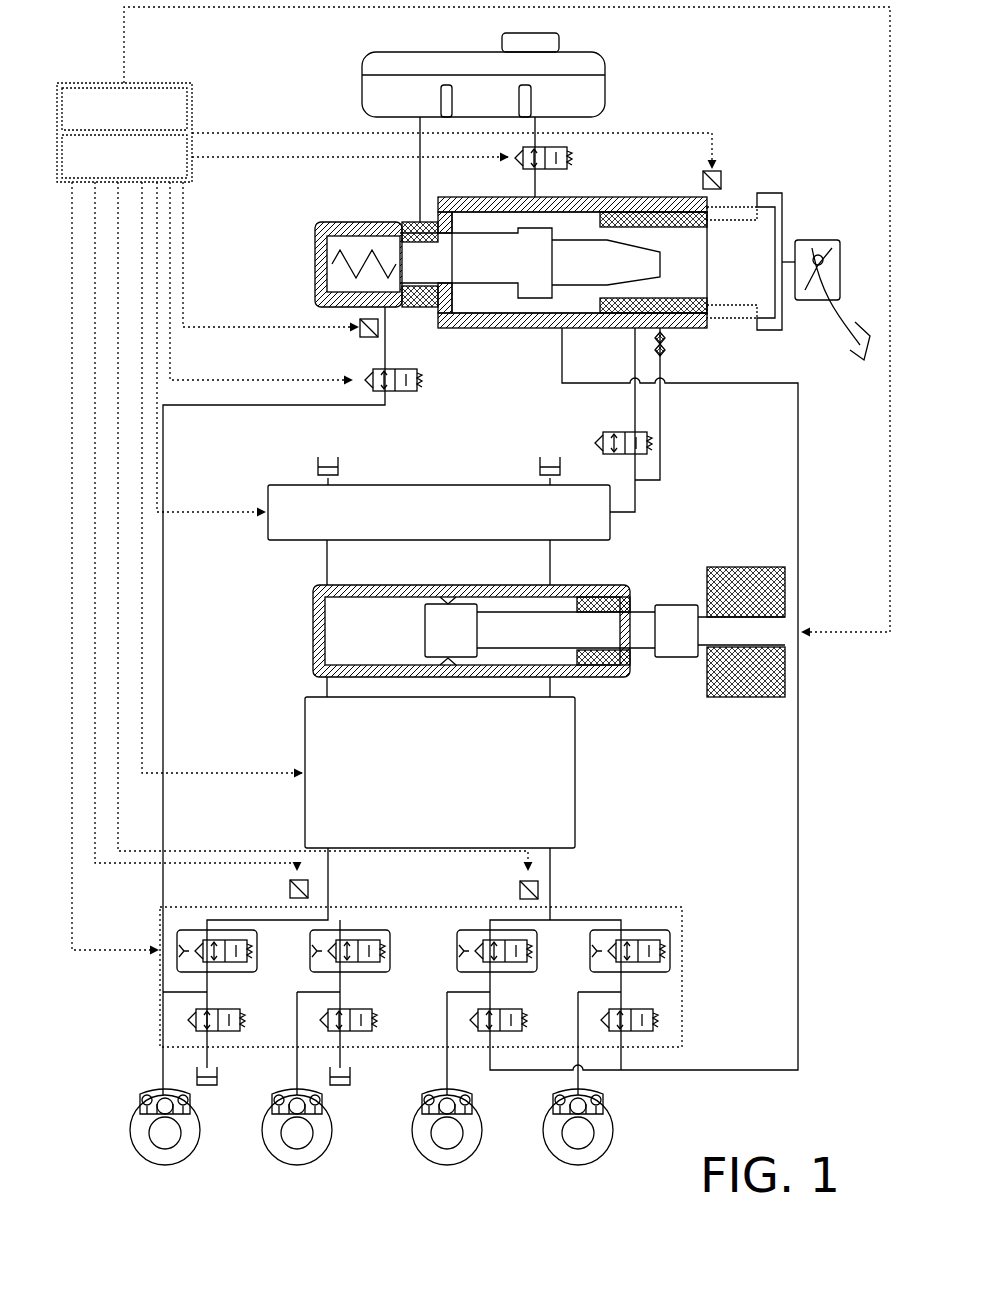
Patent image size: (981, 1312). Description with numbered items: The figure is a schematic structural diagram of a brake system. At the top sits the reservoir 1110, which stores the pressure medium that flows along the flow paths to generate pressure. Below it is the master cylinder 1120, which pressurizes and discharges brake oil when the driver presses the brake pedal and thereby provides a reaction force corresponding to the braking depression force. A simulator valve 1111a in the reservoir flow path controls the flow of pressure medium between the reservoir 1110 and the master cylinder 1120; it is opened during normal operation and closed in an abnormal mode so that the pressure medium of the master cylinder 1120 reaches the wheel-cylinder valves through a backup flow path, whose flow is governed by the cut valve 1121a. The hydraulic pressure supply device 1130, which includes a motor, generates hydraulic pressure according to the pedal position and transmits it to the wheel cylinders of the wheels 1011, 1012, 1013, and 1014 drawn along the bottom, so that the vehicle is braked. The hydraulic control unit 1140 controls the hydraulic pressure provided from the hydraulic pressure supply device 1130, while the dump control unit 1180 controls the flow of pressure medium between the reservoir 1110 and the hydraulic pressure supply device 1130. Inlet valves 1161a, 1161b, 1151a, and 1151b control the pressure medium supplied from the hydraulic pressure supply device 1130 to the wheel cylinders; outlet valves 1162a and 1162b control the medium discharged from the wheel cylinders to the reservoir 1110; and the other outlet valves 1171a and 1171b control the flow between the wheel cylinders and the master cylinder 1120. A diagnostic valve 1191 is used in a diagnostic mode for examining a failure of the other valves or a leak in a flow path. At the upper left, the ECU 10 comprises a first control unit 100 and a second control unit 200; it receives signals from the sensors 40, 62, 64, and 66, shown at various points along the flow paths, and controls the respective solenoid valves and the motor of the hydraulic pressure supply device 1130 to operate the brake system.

The electronic control unit 10 is at (158, 83).
The first control unit 100 is at (192, 107).
The second control unit 200 is at (192, 166).
The reservoir 1110 is at (606, 58).
The simulator valve 1111a is at (572, 157).
The sensor 40 is at (723, 176).
The master cylinder 1120 is at (303, 240).
The sensor 62 is at (360, 336).
The cut valve 1121a is at (426, 370).
The dump control unit 1180 is at (262, 478).
The diagnostic valve 1191 is at (597, 446).
The hydraulic pressure supply device 1130 is at (295, 601).
The hydraulic control unit 1140 is at (304, 722).
The sensor 66 is at (290, 889).
The sensor 64 is at (538, 898).
The inlet valve 1161a is at (198, 942).
The inlet valve 1161b is at (348, 940).
The inlet valve 1151a is at (504, 942).
The inlet valve 1151b is at (646, 940).
The outlet valve 1162a is at (188, 1016).
The outlet valve 1162b is at (361, 1030).
The outlet valve 1171a is at (498, 1032).
The outlet valve 1171b is at (656, 1012).
The wheel 1013 is at (165, 1165).
The wheel 1014 is at (297, 1165).
The wheel 1011 is at (447, 1165).
The wheel 1012 is at (578, 1165).